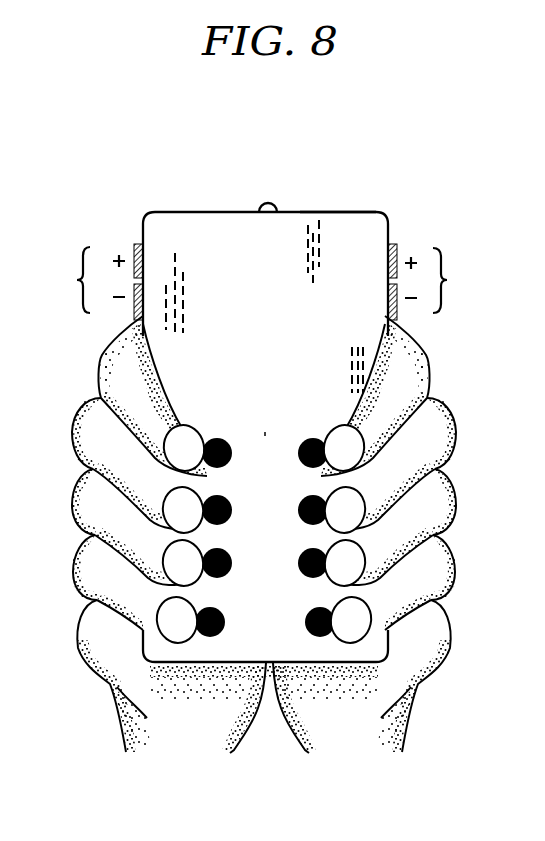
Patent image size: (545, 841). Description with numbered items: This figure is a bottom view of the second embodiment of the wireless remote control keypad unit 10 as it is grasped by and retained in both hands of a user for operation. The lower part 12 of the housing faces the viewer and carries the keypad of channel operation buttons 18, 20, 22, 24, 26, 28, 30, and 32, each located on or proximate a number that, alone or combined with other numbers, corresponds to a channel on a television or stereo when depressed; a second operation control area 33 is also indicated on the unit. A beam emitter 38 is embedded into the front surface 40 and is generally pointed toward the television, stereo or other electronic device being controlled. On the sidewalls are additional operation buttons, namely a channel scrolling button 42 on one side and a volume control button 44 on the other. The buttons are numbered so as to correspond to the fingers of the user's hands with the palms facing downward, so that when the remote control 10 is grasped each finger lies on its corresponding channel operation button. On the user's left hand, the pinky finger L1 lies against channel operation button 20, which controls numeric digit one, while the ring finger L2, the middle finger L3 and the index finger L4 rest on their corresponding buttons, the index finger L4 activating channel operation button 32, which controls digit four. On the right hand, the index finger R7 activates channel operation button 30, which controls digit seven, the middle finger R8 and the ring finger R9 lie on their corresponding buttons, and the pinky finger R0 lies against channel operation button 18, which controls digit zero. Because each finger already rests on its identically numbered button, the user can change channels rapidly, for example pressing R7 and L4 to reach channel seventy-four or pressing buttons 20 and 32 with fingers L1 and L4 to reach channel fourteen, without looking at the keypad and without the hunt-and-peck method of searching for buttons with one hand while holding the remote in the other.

The wireless remote control keypad unit 10 is at (178, 190).
The lower part 12 is at (281, 332).
The channel operation button 18 is at (208, 640).
The channel operation button 20 is at (320, 640).
The channel operation button 22 is at (223, 583).
The channel operation button 24 is at (307, 586).
The channel operation button 26 is at (228, 496).
The channel operation button 28 is at (298, 526).
The channel operation button 30 is at (213, 440).
The channel operation button 32 is at (318, 440).
The second operation control area 33 is at (265, 434).
The beam emitter 38 is at (275, 208).
The front surface 40 is at (357, 212).
The channel scrolling button 42 is at (78, 280).
The volume control button 44 is at (448, 280).
The right index finger R7 is at (128, 382).
The right middle finger R8 is at (92, 423).
The right ring finger R9 is at (80, 490).
The right pinky finger R0 is at (105, 578).
The left index finger L4 is at (408, 372).
The left middle finger L3 is at (442, 428).
The left ring finger L2 is at (448, 500).
The left pinky finger L1 is at (425, 576).